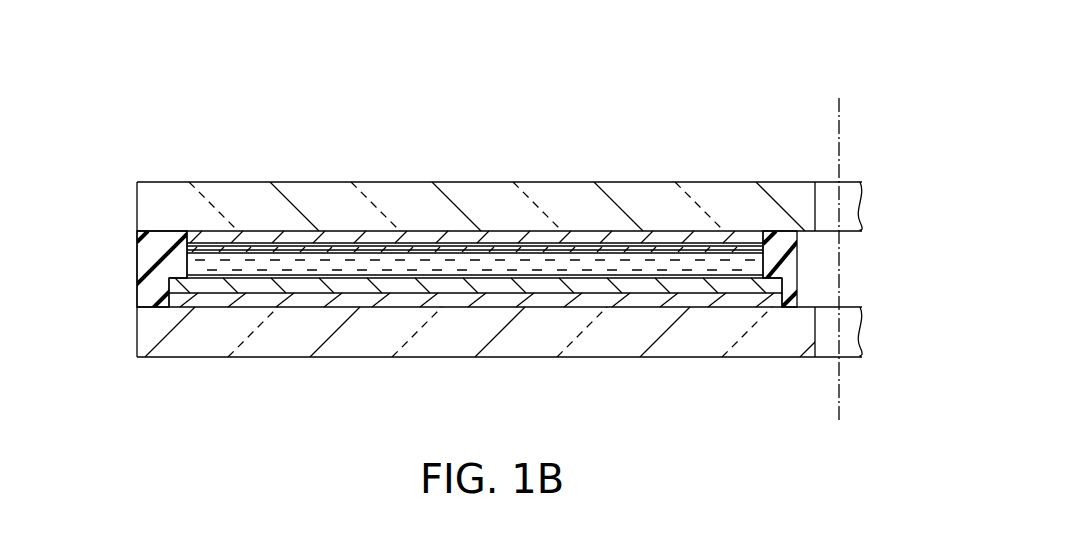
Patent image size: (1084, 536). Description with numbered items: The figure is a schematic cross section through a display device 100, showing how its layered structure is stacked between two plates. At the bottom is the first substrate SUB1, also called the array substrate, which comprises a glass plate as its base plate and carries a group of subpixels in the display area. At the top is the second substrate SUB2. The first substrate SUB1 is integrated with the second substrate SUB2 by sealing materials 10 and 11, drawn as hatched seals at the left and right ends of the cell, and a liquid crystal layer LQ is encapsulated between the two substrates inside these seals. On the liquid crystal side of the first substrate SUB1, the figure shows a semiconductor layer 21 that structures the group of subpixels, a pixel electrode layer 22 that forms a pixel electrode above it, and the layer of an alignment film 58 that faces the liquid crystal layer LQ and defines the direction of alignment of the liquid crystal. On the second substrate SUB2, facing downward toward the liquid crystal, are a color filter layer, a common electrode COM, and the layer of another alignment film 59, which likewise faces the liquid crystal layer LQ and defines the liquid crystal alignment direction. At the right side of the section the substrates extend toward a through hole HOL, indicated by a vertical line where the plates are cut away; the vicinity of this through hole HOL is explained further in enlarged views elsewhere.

The display device 100 is at (727, 90).
The second substrate SUB2 is at (216, 178).
The first substrate SUB1 is at (197, 362).
The through hole HOL is at (828, 198).
The sealing material 10 is at (140, 258).
The sealing material 11 is at (782, 240).
The common electrode COM is at (650, 248).
The alignment film 59 is at (531, 253).
The liquid crystal layer LQ is at (612, 268).
The alignment film 58 is at (483, 277).
The pixel electrode layer 22 is at (370, 288).
The semiconductor layer 21 is at (308, 300).